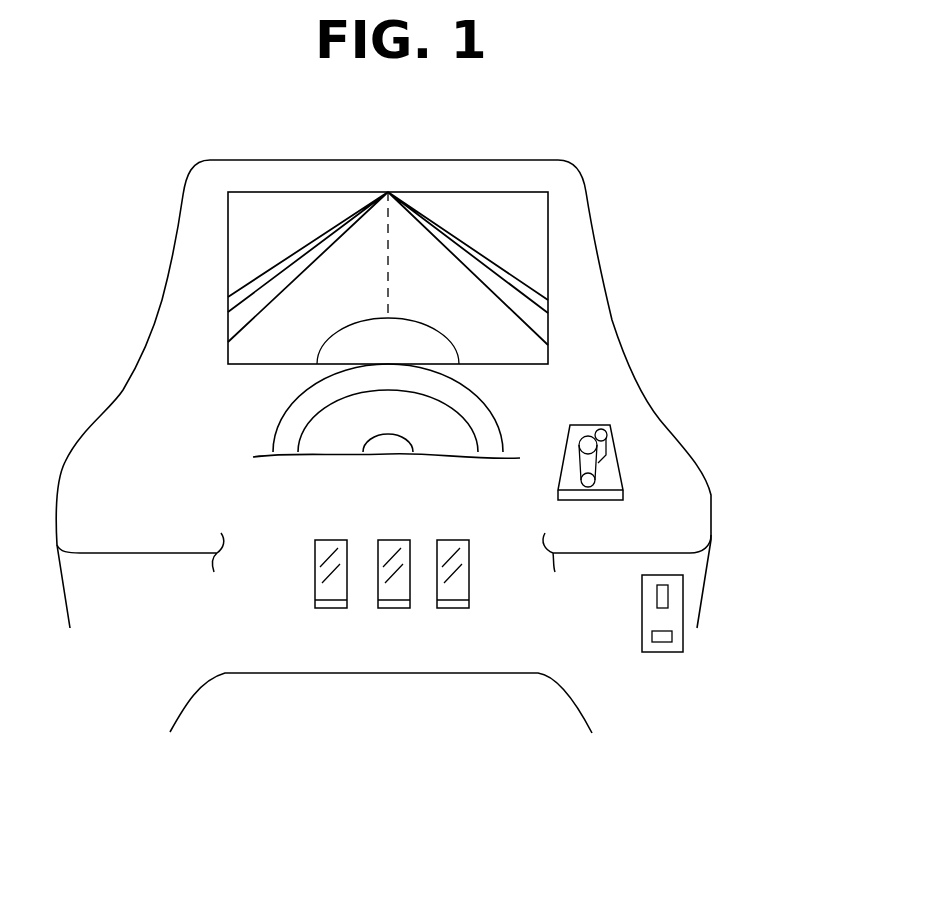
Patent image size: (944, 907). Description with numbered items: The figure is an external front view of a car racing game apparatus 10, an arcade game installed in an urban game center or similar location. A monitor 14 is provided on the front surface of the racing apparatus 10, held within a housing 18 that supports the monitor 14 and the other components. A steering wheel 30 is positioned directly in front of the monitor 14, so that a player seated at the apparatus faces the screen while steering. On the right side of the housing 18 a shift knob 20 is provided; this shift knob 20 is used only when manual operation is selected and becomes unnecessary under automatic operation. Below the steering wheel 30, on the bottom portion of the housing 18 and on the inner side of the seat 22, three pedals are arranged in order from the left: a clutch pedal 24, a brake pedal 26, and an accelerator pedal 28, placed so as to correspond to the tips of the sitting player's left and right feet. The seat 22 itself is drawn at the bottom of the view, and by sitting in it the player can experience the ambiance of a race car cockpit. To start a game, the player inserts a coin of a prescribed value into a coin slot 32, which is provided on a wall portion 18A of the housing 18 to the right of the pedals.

The car racing game apparatus 10 is at (624, 137).
The monitor 14 is at (465, 212).
The housing 18 is at (603, 280).
The wall portion 18A is at (598, 590).
The shift knob 20 is at (607, 438).
The seat 22 is at (562, 725).
The clutch pedal 24 is at (327, 592).
The brake pedal 26 is at (398, 592).
The accelerator pedal 28 is at (452, 592).
The steering wheel 30 is at (478, 415).
The coin slot 32 is at (684, 605).